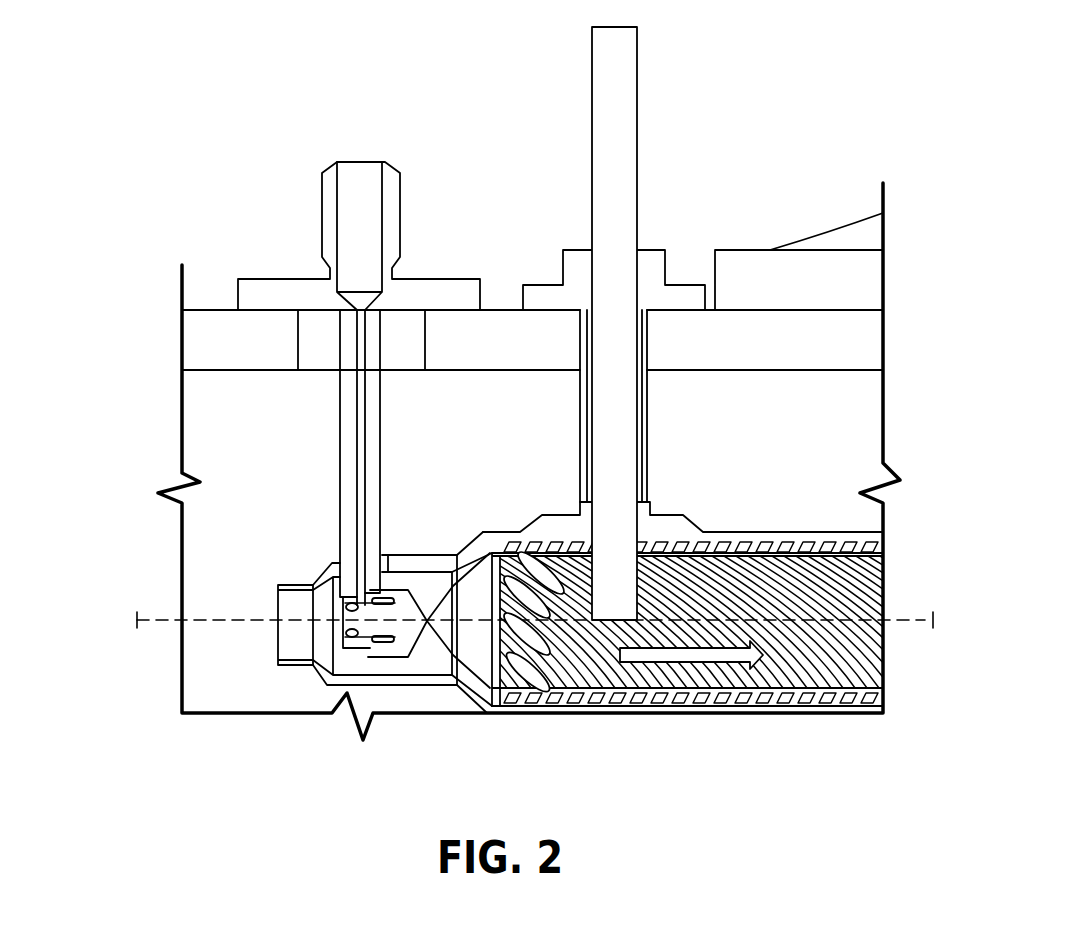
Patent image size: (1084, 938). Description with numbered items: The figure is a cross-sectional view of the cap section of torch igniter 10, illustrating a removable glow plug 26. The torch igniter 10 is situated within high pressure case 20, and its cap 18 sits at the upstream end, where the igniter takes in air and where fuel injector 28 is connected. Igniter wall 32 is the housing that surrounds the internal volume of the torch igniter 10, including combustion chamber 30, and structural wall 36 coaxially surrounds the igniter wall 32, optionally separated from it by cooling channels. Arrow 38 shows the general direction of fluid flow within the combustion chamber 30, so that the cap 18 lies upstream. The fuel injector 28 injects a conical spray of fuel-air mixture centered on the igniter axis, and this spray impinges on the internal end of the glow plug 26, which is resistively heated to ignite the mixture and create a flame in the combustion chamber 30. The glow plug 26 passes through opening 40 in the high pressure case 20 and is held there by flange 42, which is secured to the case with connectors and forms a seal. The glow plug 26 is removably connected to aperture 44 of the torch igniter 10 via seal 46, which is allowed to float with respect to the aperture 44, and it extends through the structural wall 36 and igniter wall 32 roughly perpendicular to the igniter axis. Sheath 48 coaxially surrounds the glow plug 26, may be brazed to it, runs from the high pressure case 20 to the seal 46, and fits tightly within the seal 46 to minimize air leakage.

The torch igniter 10 is at (114, 568).
The cap 18 is at (417, 723).
The high pressure case 20 is at (200, 345).
The glow plug 26 is at (637, 100).
The fuel injector 28 is at (282, 208).
The combustion chamber 30 is at (856, 605).
The igniter wall 32 is at (847, 690).
The structural wall 36 is at (770, 717).
The arrow 38 is at (695, 663).
The opening 40 is at (659, 315).
The flange 42 is at (557, 290).
The aperture 44 is at (590, 557).
The seal 46 is at (662, 514).
The sheath 48 is at (571, 458).